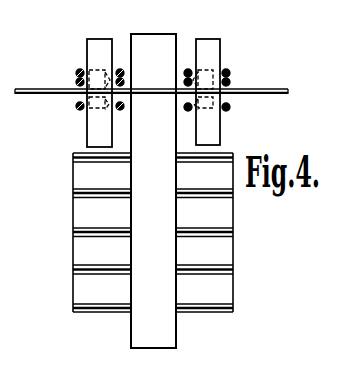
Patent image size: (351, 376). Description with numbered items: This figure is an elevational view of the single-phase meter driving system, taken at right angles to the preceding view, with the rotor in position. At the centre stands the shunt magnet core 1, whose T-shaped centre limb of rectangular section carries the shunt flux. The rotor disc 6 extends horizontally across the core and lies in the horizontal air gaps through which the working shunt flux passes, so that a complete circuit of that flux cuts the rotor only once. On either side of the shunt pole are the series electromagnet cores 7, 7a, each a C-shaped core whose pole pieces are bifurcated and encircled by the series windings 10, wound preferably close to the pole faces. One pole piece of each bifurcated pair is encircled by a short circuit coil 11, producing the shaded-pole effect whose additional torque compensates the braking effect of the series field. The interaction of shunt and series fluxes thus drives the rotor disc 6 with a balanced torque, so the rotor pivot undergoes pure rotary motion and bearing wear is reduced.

The shunt magnet core 1 is at (153, 191).
The rotor disc 6 is at (252, 89).
The series electromagnet core 7 is at (97, 44).
The series electromagnet core 7a is at (207, 46).
The series windings 10 is at (88, 72).
The short circuit coil 11 is at (88, 108).